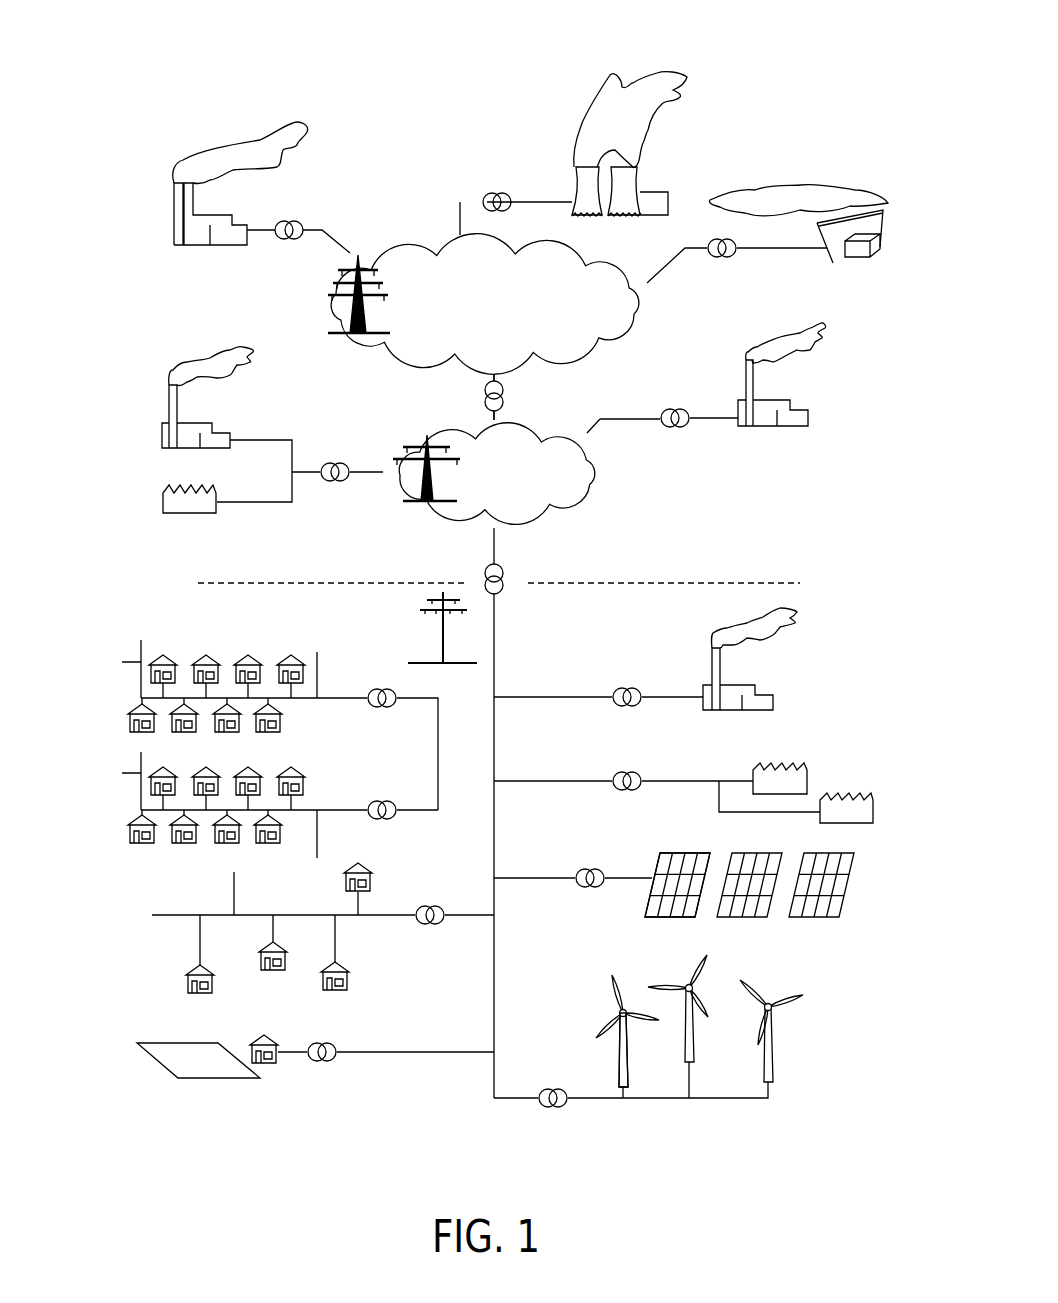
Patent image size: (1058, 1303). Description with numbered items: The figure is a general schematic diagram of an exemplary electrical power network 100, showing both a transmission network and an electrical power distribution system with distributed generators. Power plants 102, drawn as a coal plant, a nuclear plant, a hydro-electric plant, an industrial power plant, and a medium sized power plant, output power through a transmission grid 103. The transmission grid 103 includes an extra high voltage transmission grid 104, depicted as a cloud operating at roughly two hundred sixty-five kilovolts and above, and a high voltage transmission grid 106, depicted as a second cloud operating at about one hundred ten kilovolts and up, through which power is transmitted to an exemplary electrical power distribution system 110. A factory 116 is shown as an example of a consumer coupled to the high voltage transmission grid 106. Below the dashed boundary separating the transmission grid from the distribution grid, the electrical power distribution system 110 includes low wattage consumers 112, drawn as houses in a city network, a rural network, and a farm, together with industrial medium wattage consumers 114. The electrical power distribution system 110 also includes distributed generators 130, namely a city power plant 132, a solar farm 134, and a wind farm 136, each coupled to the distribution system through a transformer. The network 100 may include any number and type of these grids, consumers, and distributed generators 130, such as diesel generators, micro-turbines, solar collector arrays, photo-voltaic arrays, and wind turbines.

The electrical power network 100 is at (302, 52).
The power plants 102 is at (275, 117).
The transmission grid 103 is at (413, 377).
The extra high voltage transmission grid 104 is at (310, 293).
The high voltage transmission grid 106 is at (413, 517).
The electrical power distribution system 110 is at (494, 620).
The low wattage consumers 112 is at (187, 850).
The industrial medium wattage consumers 114 is at (802, 757).
The factory 116 is at (163, 500).
The distributed generators 130 is at (782, 685).
The city power plant 132 is at (785, 647).
The solar farm 134 is at (643, 903).
The wind farm 136 is at (615, 1062).